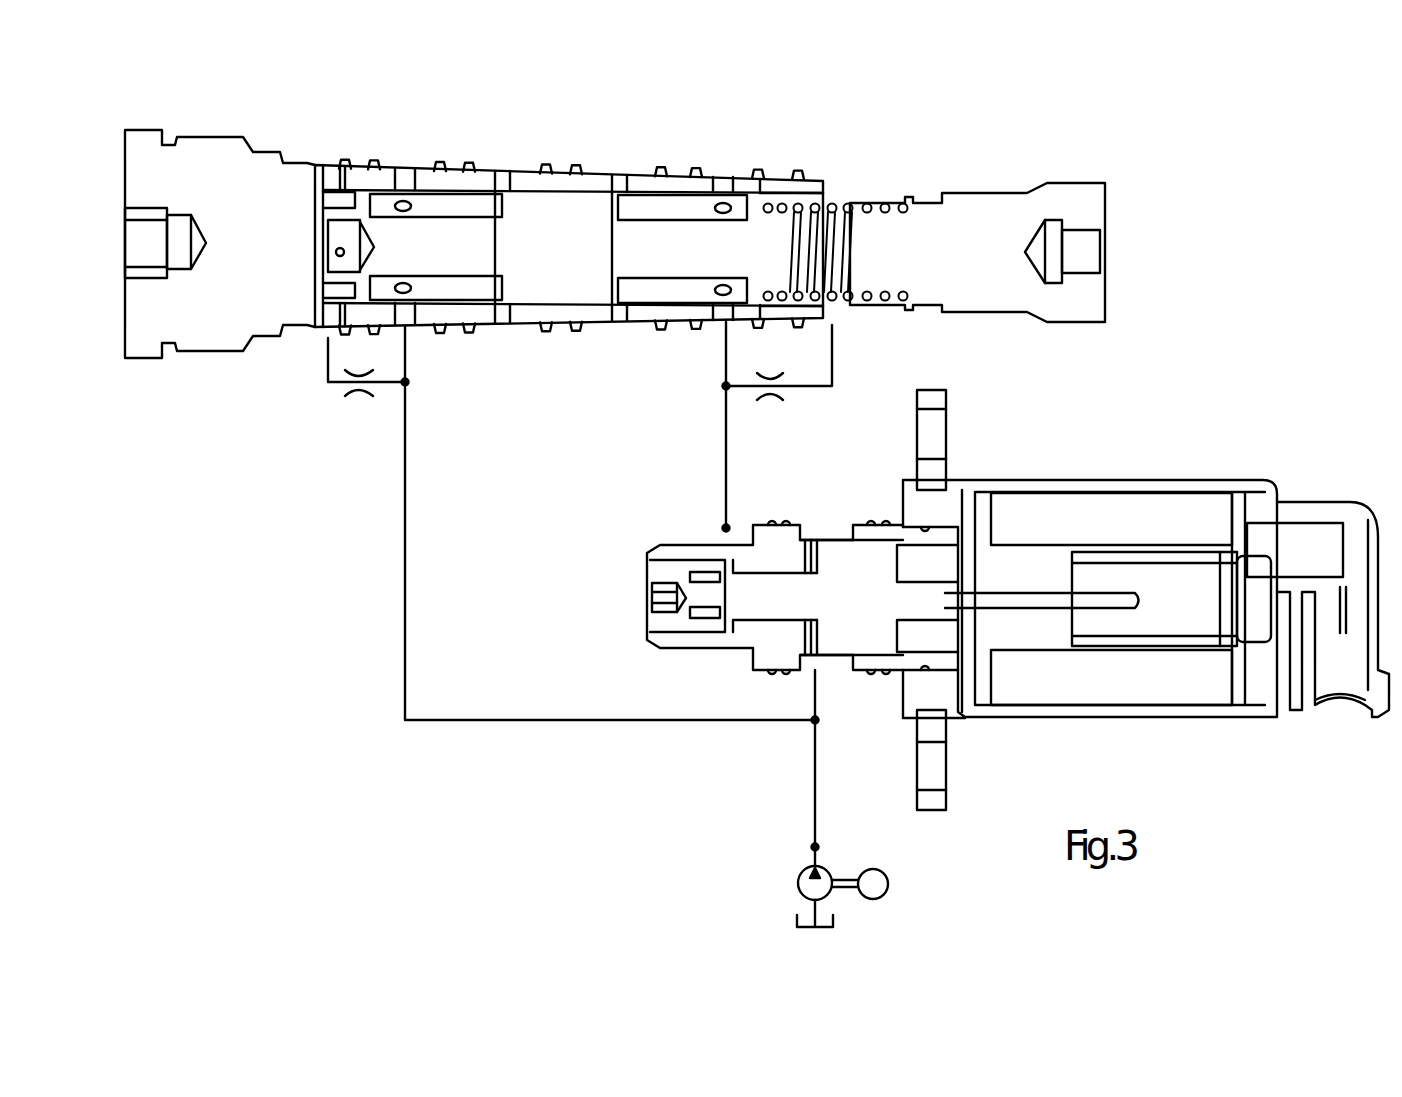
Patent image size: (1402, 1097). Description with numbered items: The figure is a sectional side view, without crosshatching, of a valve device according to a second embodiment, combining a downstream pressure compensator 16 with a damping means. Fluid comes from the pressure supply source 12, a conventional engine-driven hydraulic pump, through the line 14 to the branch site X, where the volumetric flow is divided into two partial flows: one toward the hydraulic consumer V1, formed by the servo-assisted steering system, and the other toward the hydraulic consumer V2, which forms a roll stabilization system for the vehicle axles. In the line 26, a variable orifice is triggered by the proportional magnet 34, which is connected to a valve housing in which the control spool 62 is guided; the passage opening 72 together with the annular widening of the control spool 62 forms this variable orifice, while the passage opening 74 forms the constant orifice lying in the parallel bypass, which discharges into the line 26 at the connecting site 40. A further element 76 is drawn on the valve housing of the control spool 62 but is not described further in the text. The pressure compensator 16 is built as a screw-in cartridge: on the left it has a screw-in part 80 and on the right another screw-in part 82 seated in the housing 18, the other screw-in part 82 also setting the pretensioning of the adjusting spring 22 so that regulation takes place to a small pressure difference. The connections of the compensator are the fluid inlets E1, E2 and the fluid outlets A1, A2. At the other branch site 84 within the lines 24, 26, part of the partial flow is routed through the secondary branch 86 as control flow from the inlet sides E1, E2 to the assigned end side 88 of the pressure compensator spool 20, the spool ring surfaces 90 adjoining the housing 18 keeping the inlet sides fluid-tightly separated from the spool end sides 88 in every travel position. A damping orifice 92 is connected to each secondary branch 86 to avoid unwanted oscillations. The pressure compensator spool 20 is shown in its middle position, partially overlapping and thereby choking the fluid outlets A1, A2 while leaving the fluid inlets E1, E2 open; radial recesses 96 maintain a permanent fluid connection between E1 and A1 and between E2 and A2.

The pressure supply source 12 is at (798, 873).
The line 14 is at (815, 790).
The pressure compensator 16 is at (749, 172).
The housing 18 is at (438, 178).
The pressure compensator spool 20 is at (537, 248).
The adjusting spring 22 is at (850, 203).
The line 24 is at (406, 600).
The line 26 is at (725, 462).
The proportional magnet 34 is at (1123, 481).
The connecting site 40 is at (713, 427).
The control spool 62 is at (802, 586).
The passage opening 72 is at (825, 540).
The passage opening 74 is at (807, 540).
The seal 76 is at (738, 640).
The screw-in part 80 is at (209, 163).
The other screw-in part 82 is at (987, 208).
The other branch site 84 is at (607, 525).
The secondary branch 86 is at (572, 406).
The spool end side 88 is at (614, 191).
The spool ring surface 90 is at (343, 187).
The damping orifice 92 is at (362, 392).
The radial recess 96 is at (440, 290).
The fluid outlet A1 is at (668, 194).
The hydraulic consumer V1 is at (622, 177).
The fluid outlet A2 is at (547, 195).
The hydraulic consumer V2 is at (502, 175).
The fluid inlet E1 is at (717, 323).
The fluid inlet E2 is at (407, 330).
The branch site X is at (813, 722).